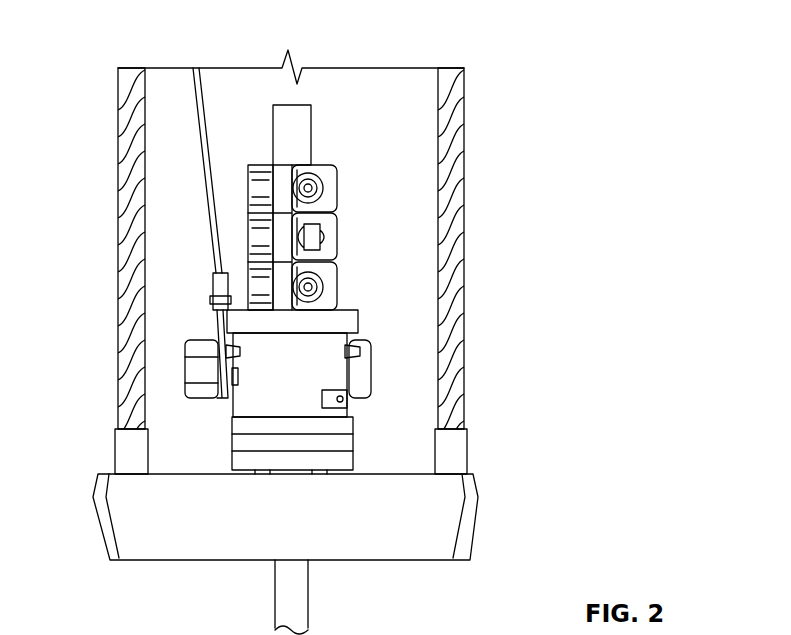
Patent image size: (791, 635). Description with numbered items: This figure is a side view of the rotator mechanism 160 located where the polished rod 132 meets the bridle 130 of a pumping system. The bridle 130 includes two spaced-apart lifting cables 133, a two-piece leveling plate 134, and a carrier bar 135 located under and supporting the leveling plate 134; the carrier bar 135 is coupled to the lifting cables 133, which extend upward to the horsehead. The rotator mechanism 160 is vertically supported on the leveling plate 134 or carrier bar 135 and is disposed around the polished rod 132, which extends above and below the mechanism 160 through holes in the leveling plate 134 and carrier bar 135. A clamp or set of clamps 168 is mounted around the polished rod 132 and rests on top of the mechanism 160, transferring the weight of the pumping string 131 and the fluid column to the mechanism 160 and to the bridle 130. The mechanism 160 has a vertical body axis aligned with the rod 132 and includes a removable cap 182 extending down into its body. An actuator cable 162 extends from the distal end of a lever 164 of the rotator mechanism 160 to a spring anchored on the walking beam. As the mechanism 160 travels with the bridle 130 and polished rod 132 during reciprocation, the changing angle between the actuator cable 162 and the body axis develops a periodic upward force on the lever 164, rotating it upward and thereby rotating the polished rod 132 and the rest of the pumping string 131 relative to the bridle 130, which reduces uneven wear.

The bridle 130 is at (128, 107).
The lifting cables 133 is at (458, 102).
The carrier bar 135 is at (115, 540).
The actuator cable 162 is at (200, 83).
The lever 164 is at (215, 312).
The pumping string 131 is at (305, 115).
The polished rod 132 is at (300, 140).
The clamps 168 is at (330, 217).
The removable cap 182 is at (347, 327).
The rotator mechanism 160 is at (250, 398).
The leveling plate 134 is at (240, 435).